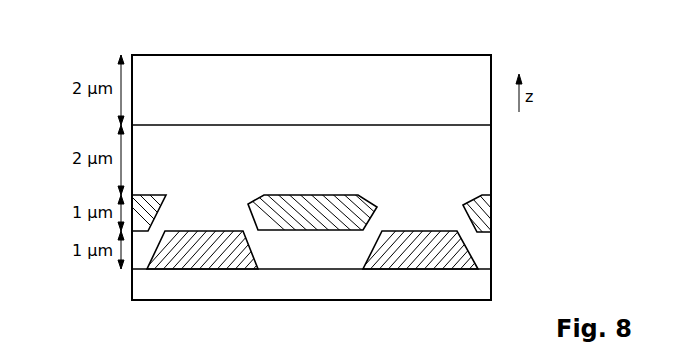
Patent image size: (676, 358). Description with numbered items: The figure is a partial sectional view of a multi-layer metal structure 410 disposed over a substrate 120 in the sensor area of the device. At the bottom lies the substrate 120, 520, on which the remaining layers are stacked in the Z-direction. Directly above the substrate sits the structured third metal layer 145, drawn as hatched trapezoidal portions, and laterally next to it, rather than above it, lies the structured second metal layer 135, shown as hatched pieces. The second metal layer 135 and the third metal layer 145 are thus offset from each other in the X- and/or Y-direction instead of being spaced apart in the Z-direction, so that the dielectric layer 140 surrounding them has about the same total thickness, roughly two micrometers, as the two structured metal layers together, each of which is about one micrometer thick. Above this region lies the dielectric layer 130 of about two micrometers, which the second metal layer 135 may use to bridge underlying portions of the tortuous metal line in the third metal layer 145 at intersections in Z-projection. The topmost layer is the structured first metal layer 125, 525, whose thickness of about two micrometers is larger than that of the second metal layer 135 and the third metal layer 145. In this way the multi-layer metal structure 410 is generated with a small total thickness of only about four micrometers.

The multi-layer metal structure 410 is at (434, 40).
The first metal layer 125 is at (486, 67).
The first metal layer 525 is at (486, 67).
The dielectric layer 130 is at (486, 160).
The second metal layer 135 is at (263, 202).
The dielectric layer 140 is at (70, 201).
The third metal layer 145 is at (232, 262).
The substrate 120 is at (484, 286).
The further substrate 520 is at (484, 286).